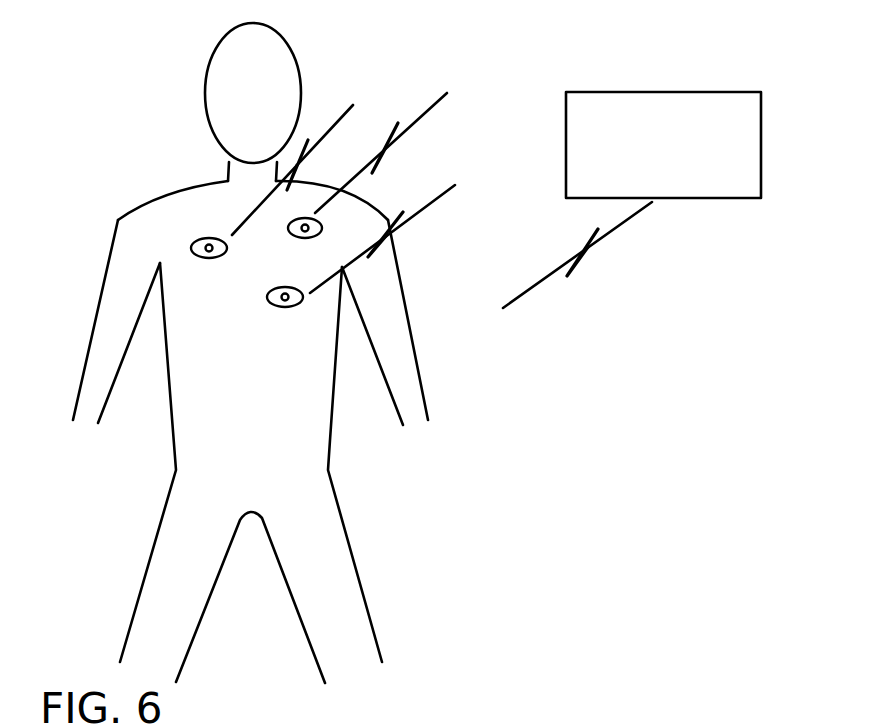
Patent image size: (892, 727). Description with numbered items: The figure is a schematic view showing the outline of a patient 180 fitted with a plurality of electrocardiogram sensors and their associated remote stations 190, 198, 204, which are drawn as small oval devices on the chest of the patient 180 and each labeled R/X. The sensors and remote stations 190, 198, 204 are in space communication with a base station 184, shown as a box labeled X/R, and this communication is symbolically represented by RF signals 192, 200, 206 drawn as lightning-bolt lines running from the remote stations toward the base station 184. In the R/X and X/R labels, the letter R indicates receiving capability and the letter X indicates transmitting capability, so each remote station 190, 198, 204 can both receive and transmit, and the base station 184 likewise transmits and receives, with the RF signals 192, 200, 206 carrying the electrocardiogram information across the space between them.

The patient 180 is at (332, 452).
The base station 184 is at (714, 92).
The sensor and associated remote station 190 is at (191, 247).
The RF signals 192 is at (353, 107).
The sensor and associated remote station 198 is at (322, 226).
The RF signals 200 is at (425, 122).
The sensor and associated remote station 204 is at (303, 297).
The RF signals 206 is at (410, 225).